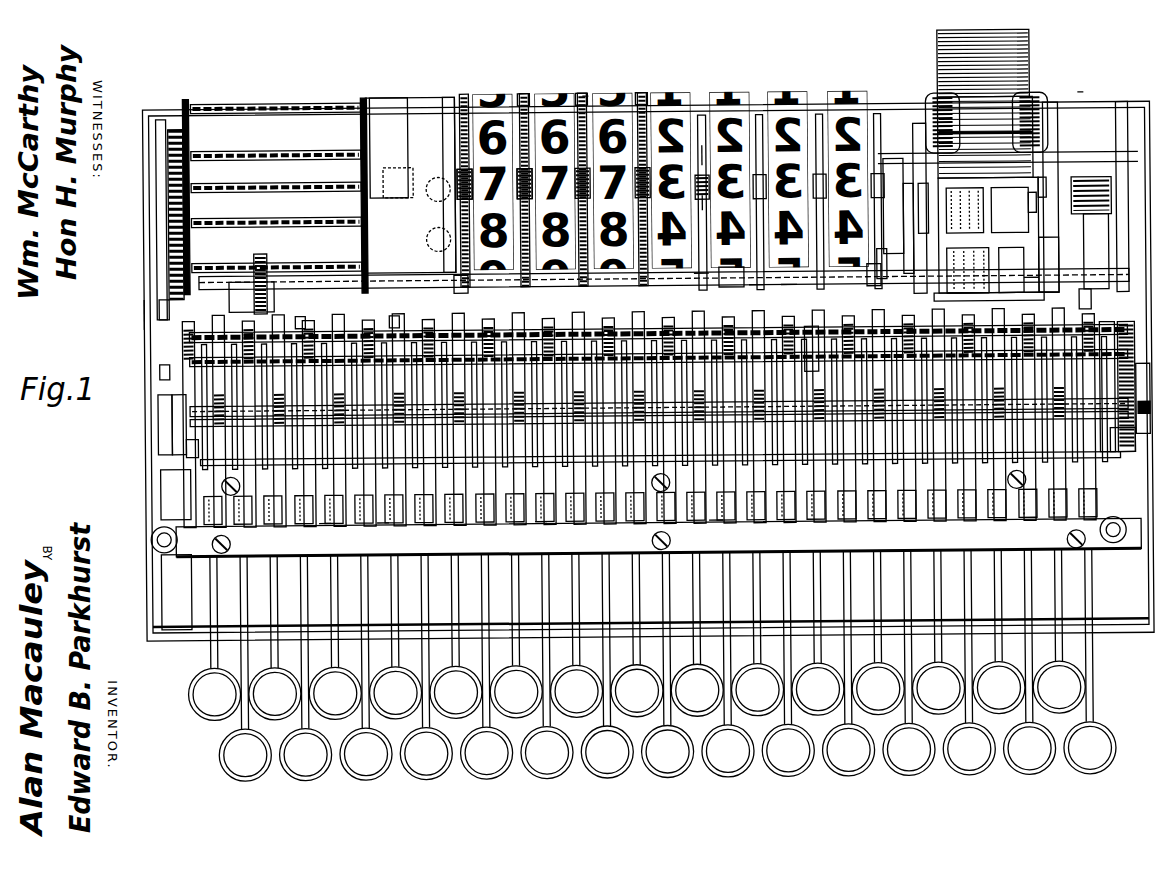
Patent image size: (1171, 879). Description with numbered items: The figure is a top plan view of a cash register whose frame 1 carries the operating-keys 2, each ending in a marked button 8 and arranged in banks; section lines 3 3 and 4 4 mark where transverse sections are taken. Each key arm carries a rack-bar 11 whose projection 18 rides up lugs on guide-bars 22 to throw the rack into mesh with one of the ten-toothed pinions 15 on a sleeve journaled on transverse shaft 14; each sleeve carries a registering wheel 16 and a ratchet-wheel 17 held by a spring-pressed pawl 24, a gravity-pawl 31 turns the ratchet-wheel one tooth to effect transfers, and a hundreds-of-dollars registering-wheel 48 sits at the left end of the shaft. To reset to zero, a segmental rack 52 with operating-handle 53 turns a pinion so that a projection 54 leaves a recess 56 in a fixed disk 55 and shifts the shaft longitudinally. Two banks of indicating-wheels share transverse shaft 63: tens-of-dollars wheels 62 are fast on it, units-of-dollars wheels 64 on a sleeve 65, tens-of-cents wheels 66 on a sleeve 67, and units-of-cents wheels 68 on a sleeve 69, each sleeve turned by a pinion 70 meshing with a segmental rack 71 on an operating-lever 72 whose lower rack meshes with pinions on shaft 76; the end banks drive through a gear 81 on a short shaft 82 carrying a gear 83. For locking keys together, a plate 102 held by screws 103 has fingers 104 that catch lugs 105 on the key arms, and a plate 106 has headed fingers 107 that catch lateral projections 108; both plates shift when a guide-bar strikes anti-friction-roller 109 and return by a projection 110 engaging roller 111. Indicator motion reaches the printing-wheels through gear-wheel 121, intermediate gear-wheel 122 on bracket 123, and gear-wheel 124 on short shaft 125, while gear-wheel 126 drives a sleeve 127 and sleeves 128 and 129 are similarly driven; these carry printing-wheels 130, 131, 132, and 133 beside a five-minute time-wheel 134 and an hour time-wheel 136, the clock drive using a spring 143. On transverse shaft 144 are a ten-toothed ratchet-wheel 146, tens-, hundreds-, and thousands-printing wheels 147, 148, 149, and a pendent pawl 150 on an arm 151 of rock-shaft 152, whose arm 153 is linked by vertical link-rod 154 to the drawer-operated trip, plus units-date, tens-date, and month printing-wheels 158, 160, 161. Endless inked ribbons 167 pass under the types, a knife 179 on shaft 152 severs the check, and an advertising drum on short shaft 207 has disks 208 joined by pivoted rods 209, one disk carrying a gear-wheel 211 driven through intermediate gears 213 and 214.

The frame 1 is at (146, 310).
The operating-keys 2 is at (205, 655).
The section line 3 is at (1083, 100).
The section line 4 is at (588, 100).
The buttons 8 is at (262, 778).
The rack-bar 11 is at (372, 322).
The transverse shaft 14 is at (160, 420).
The pinions 15 is at (358, 462).
The registering wheel 16 is at (170, 462).
The ratchet-wheel 17 is at (510, 465).
The projection or flange 18 is at (300, 322).
The guide-bars 22 is at (300, 526).
The spring-pressed pawls 24 is at (170, 475).
The operating gravity-pawl 31 is at (165, 374).
The hundreds-of-dollars registering-wheel 48 is at (175, 450).
The segmental rack 52 is at (1135, 370).
The operating-handle 53 is at (1130, 330).
The projection 54 is at (1136, 398).
The disk 55 is at (1130, 440).
The recess 56 is at (1140, 420).
The tens-of-dollars indicating-wheels 62 is at (452, 110).
The transverse shaft 63 is at (412, 100).
The units-of-dollars indicating-wheels 64 is at (500, 100).
The sleeve 65 is at (524, 100).
The tens-of-cents indicating-wheels 66 is at (560, 102).
The sleeve 67 is at (584, 105).
The units-of-cents wheels 68 is at (625, 102).
The sleeve 69 is at (650, 100).
The pinion 70 is at (474, 187).
The segmental racks 71 is at (467, 97).
The operating-levers 72 is at (428, 225).
The shaft 76 is at (812, 335).
The gear 81 is at (230, 300).
The short transverse shaft 82 is at (340, 318).
The gear 83 is at (460, 298).
The plate 102 is at (715, 530).
The screws 103 is at (222, 546).
The fingers 104 is at (322, 528).
The projecting lugs 105 is at (540, 528).
The plate 106 is at (190, 500).
The headed fingers 107 is at (380, 528).
The lateral projections 108 is at (486, 528).
The anti-friction-roller 109 is at (1085, 557).
The projection 110 is at (160, 555).
The antifriction-roller 111 is at (150, 540).
The gear-wheel 121 is at (704, 130).
The intermediate gear-wheel 122 is at (710, 205).
The bracket 123 is at (705, 160).
The gear-wheel 124 is at (700, 290).
The short shaft 125 is at (758, 295).
The gear-wheel 126 is at (762, 130).
The sleeve 127 is at (790, 295).
The sleeve 128 is at (870, 276).
The sleeve 129 is at (880, 260).
The printing-wheel 130 is at (945, 305).
The printing-wheel 131 is at (965, 305).
The printing-wheel 132 is at (1060, 290).
The printing-wheel 133 is at (1060, 300).
The five-minute-printing time-wheel 134 is at (1030, 275).
The hour time-printing wheel 136 is at (1040, 285).
The spring 143 is at (990, 135).
The transverse shaft 144 is at (925, 195).
The ratchet-wheel 146 is at (1005, 195).
The tens-printing wheel 147 is at (972, 140).
The hundreds-printing wheel 148 is at (958, 195).
The thousands-printing wheel 149 is at (930, 130).
The pendent pivoted pawl 150 is at (1030, 108).
The arm 151 is at (1045, 190).
The transverse rock-shaft 152 is at (1060, 255).
The rearwardly-projecting arm 153 is at (905, 225).
The vertical link-rod 154 is at (920, 150).
The units-date printing-wheel 158 is at (1035, 210).
The tens-date printing-wheel 160 is at (1075, 200).
The month printing-wheel 161 is at (1100, 208).
The endless inked ribbons 167 is at (890, 210).
The knife 179 is at (1085, 310).
The short shaft 207 is at (305, 178).
The disks 208 is at (195, 210).
The pivoted rods 209 is at (345, 99).
The gear-wheel 211 is at (176, 128).
The intermediate gear 213 is at (165, 196).
The intermediate gear 214 is at (160, 298).